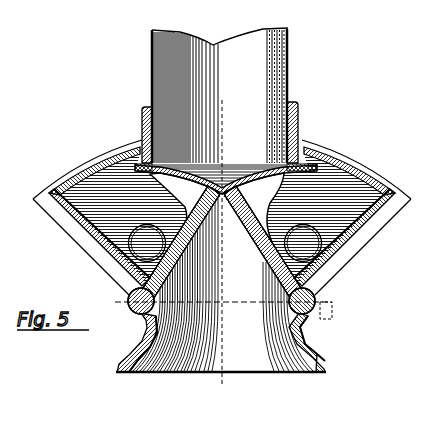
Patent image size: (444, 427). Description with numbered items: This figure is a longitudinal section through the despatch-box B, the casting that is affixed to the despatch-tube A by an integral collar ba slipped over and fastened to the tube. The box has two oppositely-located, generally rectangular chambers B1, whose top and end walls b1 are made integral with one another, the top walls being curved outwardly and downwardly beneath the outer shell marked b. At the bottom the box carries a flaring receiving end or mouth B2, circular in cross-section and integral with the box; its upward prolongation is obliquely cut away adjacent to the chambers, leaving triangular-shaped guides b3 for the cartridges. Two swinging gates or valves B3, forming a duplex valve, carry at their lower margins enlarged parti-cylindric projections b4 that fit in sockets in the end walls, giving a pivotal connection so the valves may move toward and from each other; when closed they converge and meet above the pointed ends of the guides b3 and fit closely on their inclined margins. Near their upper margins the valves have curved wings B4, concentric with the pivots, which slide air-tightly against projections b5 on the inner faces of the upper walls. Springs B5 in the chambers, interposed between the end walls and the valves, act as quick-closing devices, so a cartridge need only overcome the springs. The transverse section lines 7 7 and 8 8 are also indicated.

The despatch-tube A is at (340, 39).
The casing shell b is at (88, 167).
The integral collar ba is at (300, 125).
The projections b5 is at (139, 158).
The curved wings B4 is at (208, 163).
The chamber B1 is at (222, 227).
The spring B5 is at (147, 224).
The section line 7 7 is at (47, 200).
The top and end walls b1 is at (101, 256).
The triangular-shaped guides b3 is at (234, 256).
The swinging gates or valves B3 is at (184, 259).
The despatch-box B is at (222, 251).
The parti-cylindric projections b4 is at (112, 296).
The section line 8 8 is at (228, 307).
The flaring receiving end or mouth B2 is at (306, 352).